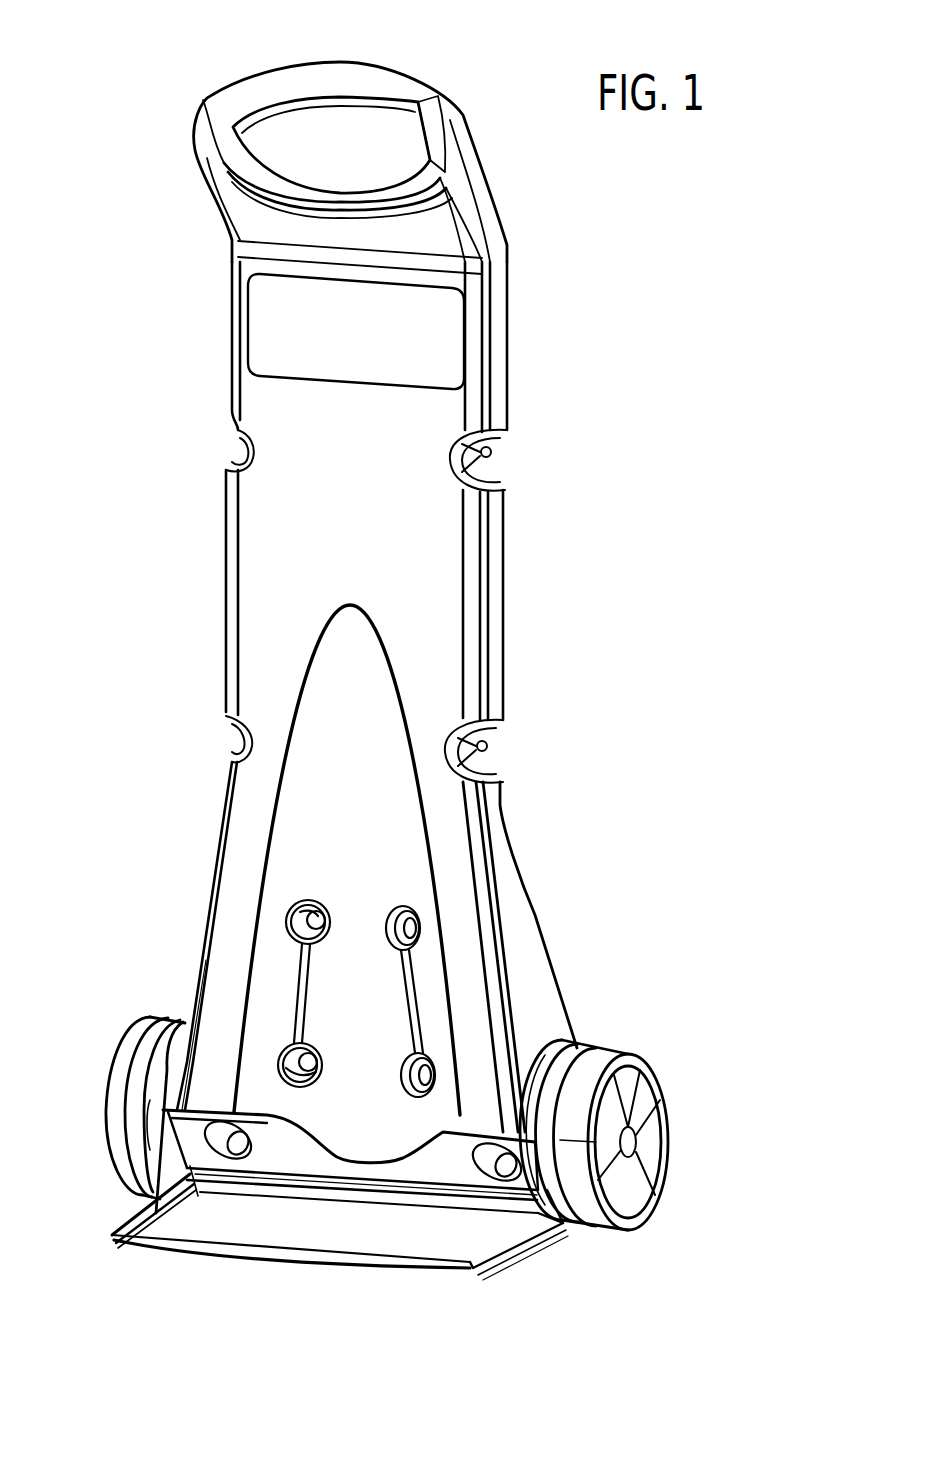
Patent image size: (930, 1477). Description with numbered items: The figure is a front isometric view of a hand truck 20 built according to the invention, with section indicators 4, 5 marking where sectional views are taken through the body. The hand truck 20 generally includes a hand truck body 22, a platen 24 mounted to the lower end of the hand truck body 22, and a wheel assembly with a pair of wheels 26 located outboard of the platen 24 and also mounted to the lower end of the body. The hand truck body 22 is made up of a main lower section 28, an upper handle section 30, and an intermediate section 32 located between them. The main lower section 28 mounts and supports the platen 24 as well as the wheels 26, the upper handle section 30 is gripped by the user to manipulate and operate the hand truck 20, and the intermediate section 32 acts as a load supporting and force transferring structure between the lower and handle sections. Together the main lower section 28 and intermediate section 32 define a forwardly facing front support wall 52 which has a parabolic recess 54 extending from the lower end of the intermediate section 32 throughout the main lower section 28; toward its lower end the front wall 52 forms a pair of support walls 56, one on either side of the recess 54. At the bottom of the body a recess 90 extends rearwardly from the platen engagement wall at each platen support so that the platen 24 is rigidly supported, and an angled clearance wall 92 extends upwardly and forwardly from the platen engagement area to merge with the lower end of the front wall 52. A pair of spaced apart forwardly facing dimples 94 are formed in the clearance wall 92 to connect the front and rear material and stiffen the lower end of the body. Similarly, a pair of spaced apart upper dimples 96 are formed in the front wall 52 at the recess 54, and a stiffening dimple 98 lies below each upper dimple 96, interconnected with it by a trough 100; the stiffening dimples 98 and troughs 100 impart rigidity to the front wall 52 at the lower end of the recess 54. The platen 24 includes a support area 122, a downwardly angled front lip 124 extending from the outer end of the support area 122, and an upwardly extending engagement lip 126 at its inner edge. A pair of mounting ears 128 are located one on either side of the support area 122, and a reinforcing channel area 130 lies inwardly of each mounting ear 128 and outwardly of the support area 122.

The section line 4- 4 is at (265, 15).
The section line 5- 5 is at (640, 468).
The hand truck 20 is at (128, 784).
The hand truck body 22 is at (542, 586).
The platen 24 is at (102, 1244).
The wheels 26 is at (112, 1055).
The main lower section 28 is at (540, 884).
The upper handle section 30 is at (497, 182).
The intermediate section 32 is at (513, 520).
The front support wall 52 is at (245, 588).
The parabolic recess 54 is at (326, 666).
The support walls 56 is at (218, 958).
The recess 90 is at (262, 1174).
The angled clearance wall 92 is at (428, 1172).
The dimples 94 is at (248, 1142).
The upper dimples 96 is at (302, 908).
The stiffening dimple 98 is at (278, 1066).
The trough 100 is at (297, 980).
The support area 122 is at (302, 1242).
The front lip 124 is at (318, 1270).
The engagement lip 126 is at (476, 1203).
The mounting ears 128 is at (143, 1122).
The reinforcing channel area 130 is at (124, 1211).